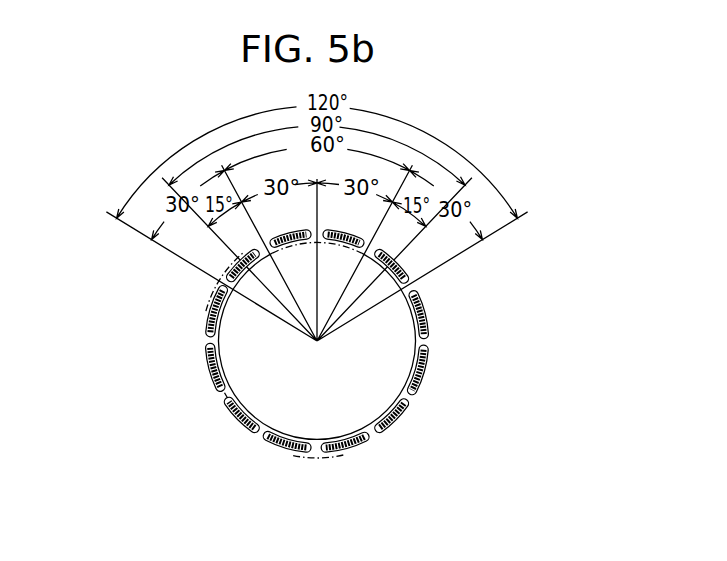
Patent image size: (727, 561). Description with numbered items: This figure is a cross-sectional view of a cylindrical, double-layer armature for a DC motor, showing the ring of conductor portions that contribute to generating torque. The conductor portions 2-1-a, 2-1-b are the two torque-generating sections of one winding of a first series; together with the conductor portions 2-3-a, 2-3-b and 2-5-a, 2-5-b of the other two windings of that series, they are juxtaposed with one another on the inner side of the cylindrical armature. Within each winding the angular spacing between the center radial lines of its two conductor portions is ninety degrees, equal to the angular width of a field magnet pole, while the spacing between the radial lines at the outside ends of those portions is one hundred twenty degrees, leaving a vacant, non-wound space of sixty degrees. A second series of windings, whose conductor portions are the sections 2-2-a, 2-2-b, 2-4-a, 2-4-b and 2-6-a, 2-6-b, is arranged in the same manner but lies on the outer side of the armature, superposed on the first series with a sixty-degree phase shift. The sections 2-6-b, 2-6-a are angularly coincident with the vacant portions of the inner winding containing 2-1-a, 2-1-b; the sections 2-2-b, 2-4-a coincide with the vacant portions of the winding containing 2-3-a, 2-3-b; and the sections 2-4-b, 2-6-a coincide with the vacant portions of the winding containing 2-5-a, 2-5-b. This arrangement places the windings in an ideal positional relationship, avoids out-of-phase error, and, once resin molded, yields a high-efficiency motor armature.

The conductor portion cross-section 2-1-a is at (224, 278).
The conductor portion cross-section 2-1-b is at (413, 272).
The conductor portion cross-section 2-2-a is at (353, 233).
The conductor portion cross-section 2-2-b is at (431, 372).
The conductor portion cross-section 2-3-a is at (421, 312).
The conductor portion cross-section 2-3-b is at (335, 452).
The conductor portion cross-section 2-4-a is at (408, 412).
The conductor portion cross-section 2-4-b is at (235, 418).
The conductor portion cross-section 2-5-a is at (286, 450).
The conductor portion cross-section 2-5-b is at (212, 306).
The conductor portion cross-section 2-6-a is at (207, 368).
The conductor portion cross-section 2-6-b is at (270, 233).